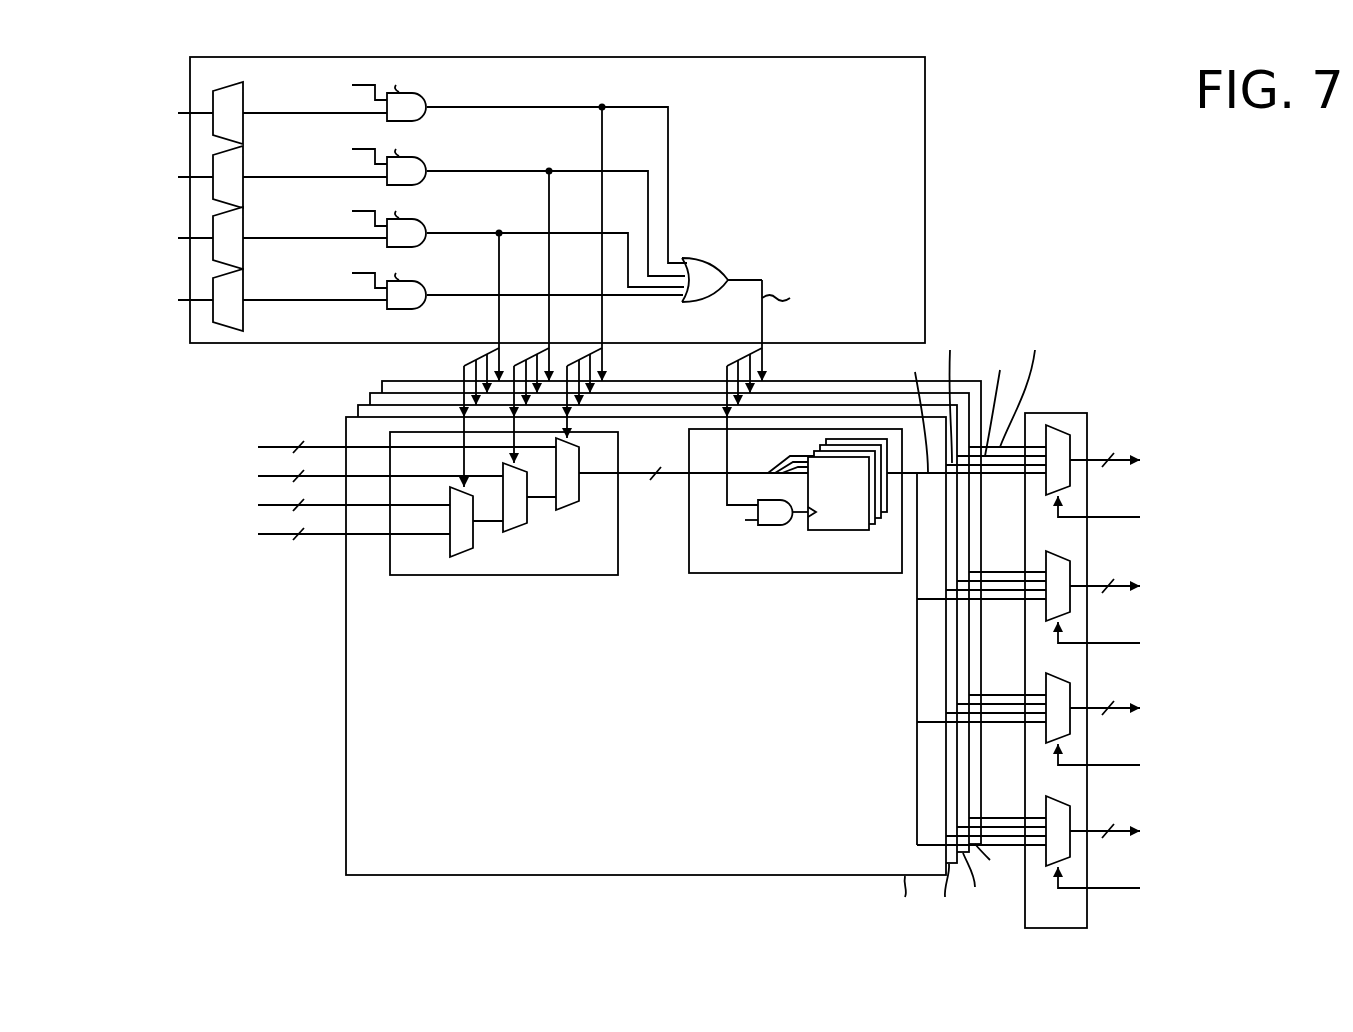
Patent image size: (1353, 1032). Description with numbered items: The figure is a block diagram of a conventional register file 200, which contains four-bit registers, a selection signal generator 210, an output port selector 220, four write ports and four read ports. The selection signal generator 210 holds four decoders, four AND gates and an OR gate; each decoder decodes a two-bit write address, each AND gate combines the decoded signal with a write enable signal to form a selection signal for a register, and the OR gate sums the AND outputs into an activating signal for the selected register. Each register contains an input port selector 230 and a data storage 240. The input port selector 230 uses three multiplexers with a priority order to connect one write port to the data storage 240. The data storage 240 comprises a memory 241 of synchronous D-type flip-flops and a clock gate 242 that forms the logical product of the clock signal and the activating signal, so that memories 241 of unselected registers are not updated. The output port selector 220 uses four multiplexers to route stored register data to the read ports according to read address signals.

The register file 200 is at (1057, 142).
The selection signal generator 210 is at (925, 218).
The output port selector 220 is at (1073, 413).
The input port selector 230 is at (412, 575).
The data storage 240 is at (689, 552).
The memory 241 is at (835, 530).
The clock gate 242 is at (770, 525).